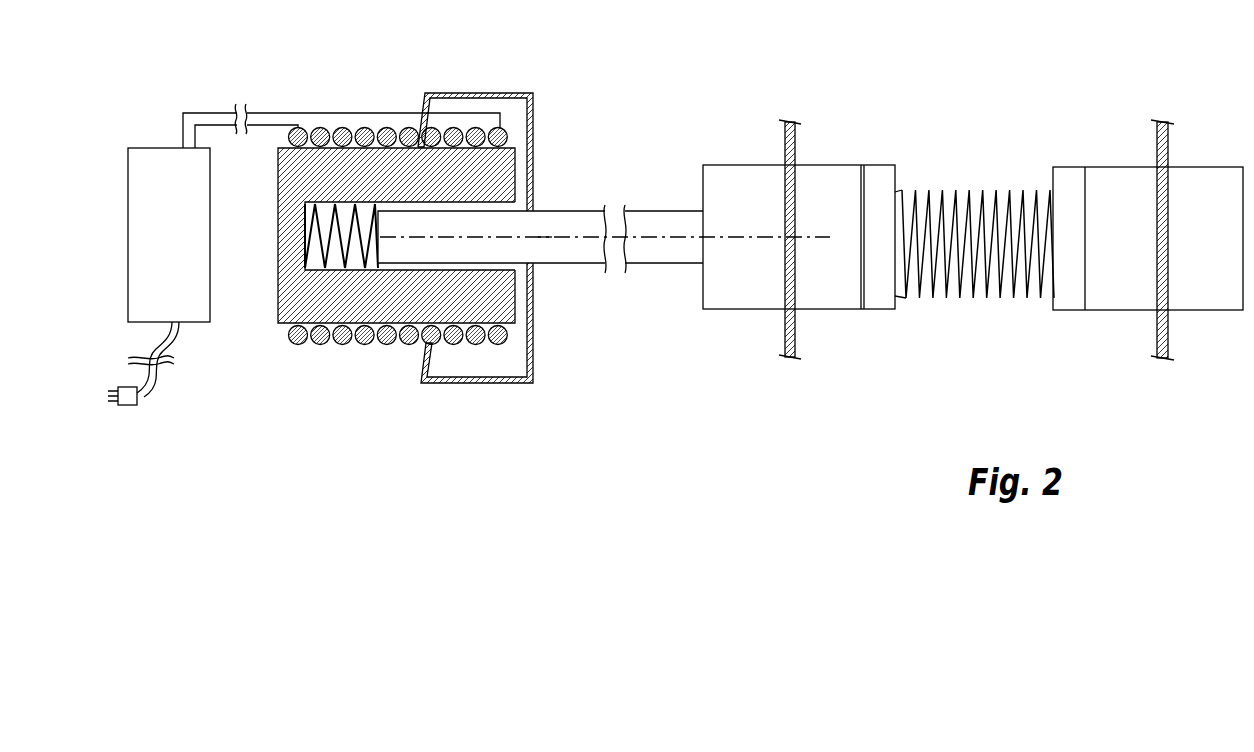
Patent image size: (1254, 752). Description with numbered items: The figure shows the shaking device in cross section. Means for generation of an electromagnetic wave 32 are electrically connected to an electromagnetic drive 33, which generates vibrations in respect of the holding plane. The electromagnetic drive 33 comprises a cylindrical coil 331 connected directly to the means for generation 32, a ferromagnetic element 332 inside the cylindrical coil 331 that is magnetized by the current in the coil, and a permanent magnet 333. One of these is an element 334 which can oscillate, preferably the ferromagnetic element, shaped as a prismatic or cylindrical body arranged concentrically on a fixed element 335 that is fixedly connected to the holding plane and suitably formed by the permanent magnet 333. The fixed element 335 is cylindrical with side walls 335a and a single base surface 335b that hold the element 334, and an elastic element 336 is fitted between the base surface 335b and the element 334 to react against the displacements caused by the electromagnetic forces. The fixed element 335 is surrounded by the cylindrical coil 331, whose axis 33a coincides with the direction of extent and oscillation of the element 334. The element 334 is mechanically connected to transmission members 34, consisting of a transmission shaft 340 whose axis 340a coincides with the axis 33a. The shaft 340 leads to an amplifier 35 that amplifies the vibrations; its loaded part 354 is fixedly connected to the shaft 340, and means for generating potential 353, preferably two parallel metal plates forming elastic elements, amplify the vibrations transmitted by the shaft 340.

The means for generation of an electromagnetic wave 32 is at (185, 229).
The electromagnetic drive 33 is at (386, 392).
The axis of the cylindrical coil 33a is at (545, 236).
The cylindrical coil 331 is at (343, 134).
The ferromagnetic element 332 is at (450, 165).
The permanent magnet 333 is at (604, 269).
The element which can oscillate 334 is at (512, 252).
The fixed element 335 is at (345, 343).
The side walls 335a is at (453, 341).
The base surface 335b is at (278, 290).
The elastic element 336 is at (305, 253).
The transmission members 34 is at (661, 182).
The transmission shaft 340 is at (657, 222).
The axis of the transmission shaft 340a is at (740, 236).
The amplifier 35 is at (997, 91).
The means for generating potential 353 is at (797, 148).
The loaded part 354 is at (797, 287).